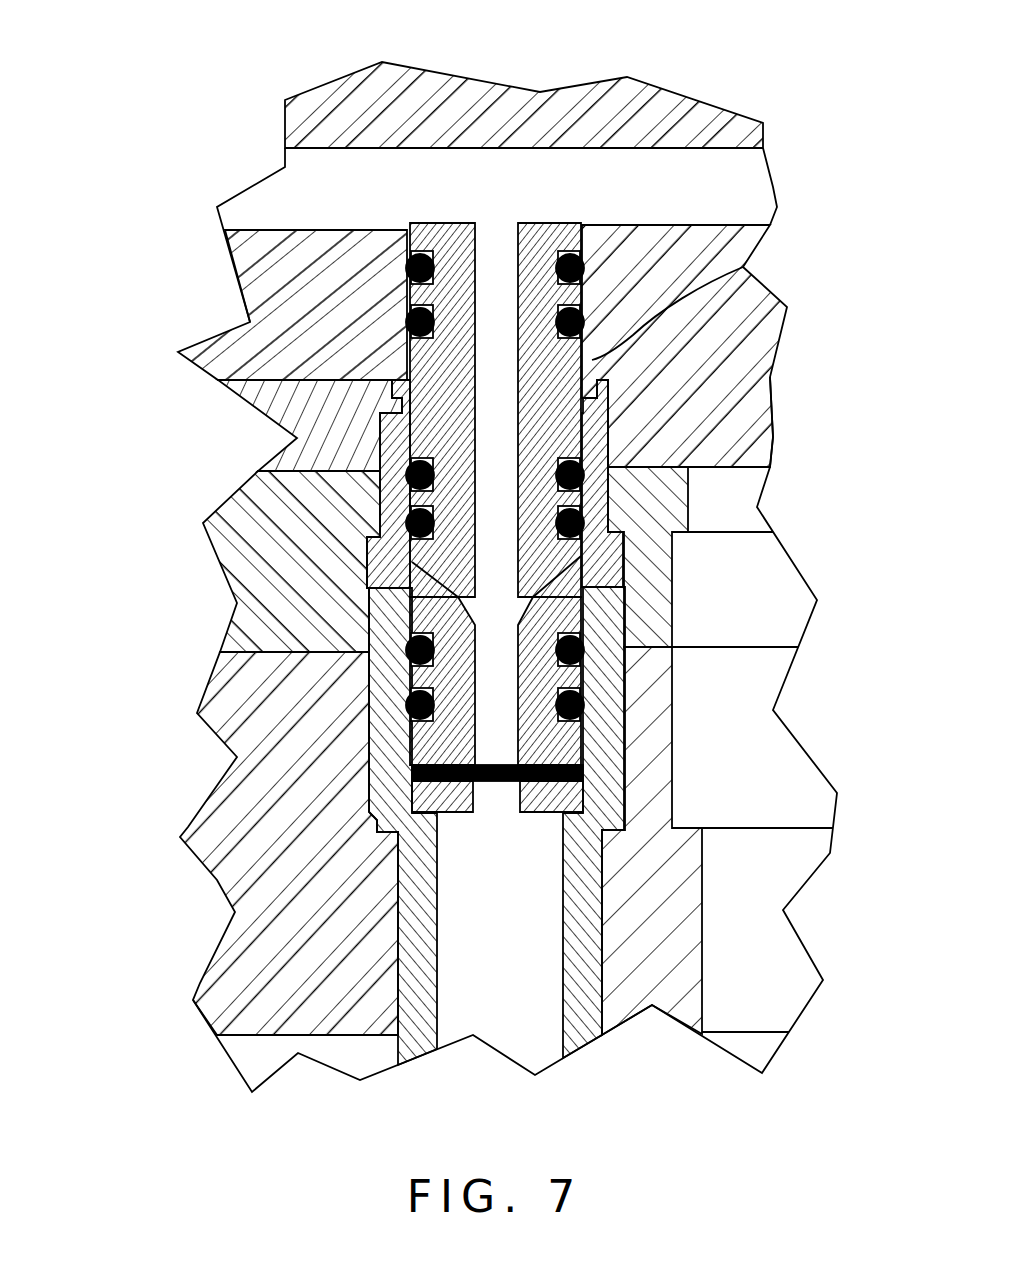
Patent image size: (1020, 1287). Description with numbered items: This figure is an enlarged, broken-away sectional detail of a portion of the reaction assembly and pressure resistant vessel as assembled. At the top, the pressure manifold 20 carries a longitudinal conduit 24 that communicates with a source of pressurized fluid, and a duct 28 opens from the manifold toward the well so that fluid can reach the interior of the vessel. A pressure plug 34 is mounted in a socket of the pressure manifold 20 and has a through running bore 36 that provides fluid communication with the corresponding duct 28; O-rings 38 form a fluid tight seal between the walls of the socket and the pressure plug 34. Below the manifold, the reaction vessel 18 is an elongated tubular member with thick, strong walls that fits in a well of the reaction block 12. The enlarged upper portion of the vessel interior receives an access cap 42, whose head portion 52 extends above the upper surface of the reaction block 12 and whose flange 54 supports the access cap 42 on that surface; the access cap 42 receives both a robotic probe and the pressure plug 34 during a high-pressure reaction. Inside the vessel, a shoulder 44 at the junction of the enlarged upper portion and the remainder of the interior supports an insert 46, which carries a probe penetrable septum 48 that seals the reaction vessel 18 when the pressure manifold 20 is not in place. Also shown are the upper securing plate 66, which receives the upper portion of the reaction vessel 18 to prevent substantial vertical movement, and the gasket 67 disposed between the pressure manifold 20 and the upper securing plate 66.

The reaction block 12 is at (213, 900).
The reaction vessel 18 is at (398, 932).
The pressure manifold 20 is at (787, 317).
The longitudinal conduit 24 is at (722, 225).
The duct 28 is at (407, 223).
The pressure plug 34 is at (525, 210).
The through running bore 36 is at (473, 297).
The O-ring 38 is at (403, 323).
The access cap 42 is at (595, 430).
The shoulder 44 is at (627, 823).
The insert 46 is at (443, 807).
The probe penetrable septum 48 is at (580, 810).
The head portion 52 is at (568, 225).
The flange 54 is at (377, 560).
The upper securing plate 66 is at (203, 525).
The gasket 67 is at (775, 437).